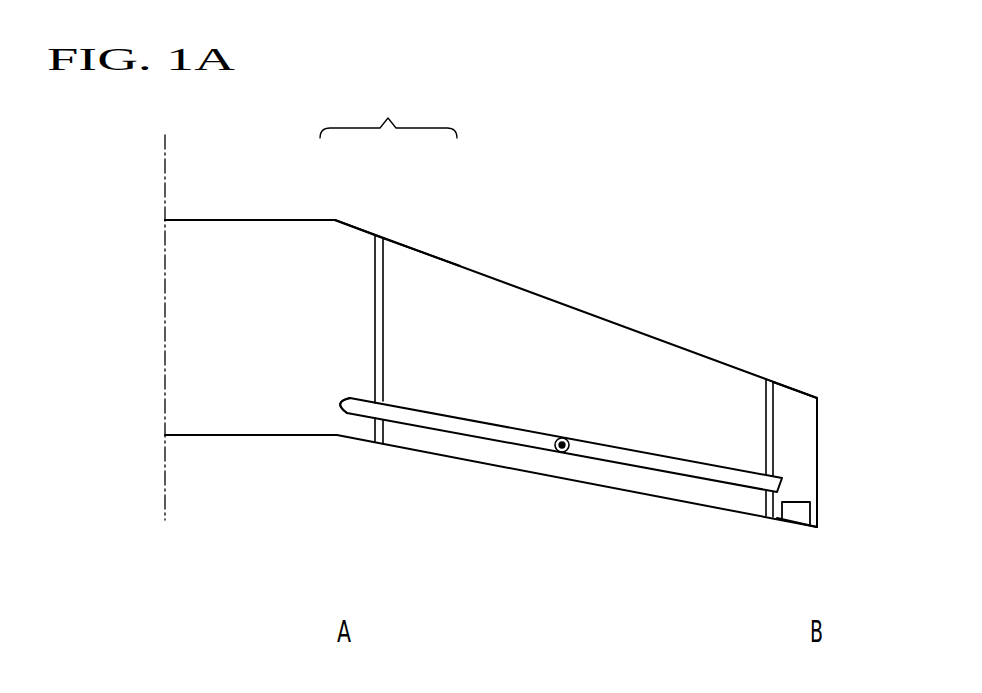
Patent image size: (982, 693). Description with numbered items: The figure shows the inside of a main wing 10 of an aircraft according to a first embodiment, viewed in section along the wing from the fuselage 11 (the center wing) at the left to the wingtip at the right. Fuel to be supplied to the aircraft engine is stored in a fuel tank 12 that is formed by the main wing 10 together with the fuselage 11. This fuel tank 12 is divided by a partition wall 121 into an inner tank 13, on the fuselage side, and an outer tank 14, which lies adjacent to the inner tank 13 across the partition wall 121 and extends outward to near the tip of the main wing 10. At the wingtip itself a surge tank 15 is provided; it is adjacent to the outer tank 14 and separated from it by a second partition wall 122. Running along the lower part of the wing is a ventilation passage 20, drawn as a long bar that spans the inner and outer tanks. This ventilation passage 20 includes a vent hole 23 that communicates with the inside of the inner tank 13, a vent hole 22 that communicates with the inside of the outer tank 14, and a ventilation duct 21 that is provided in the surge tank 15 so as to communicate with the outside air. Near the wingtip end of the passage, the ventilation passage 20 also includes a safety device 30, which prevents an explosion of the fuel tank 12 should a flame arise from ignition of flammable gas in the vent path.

The main wing 10 is at (720, 362).
The fuselage 11 is at (212, 220).
The fuel tank 12 is at (388, 111).
The inner tank 13 is at (316, 232).
The outer tank 14 is at (407, 250).
The surge tank 15 is at (800, 400).
The ventilation passage 20 is at (612, 446).
The ventilation duct 21 is at (798, 542).
The vent hole 22 is at (548, 452).
The vent hole 23 is at (338, 410).
The safety device 30 is at (817, 510).
The partition wall 121 is at (370, 357).
The partition wall 122 is at (766, 448).